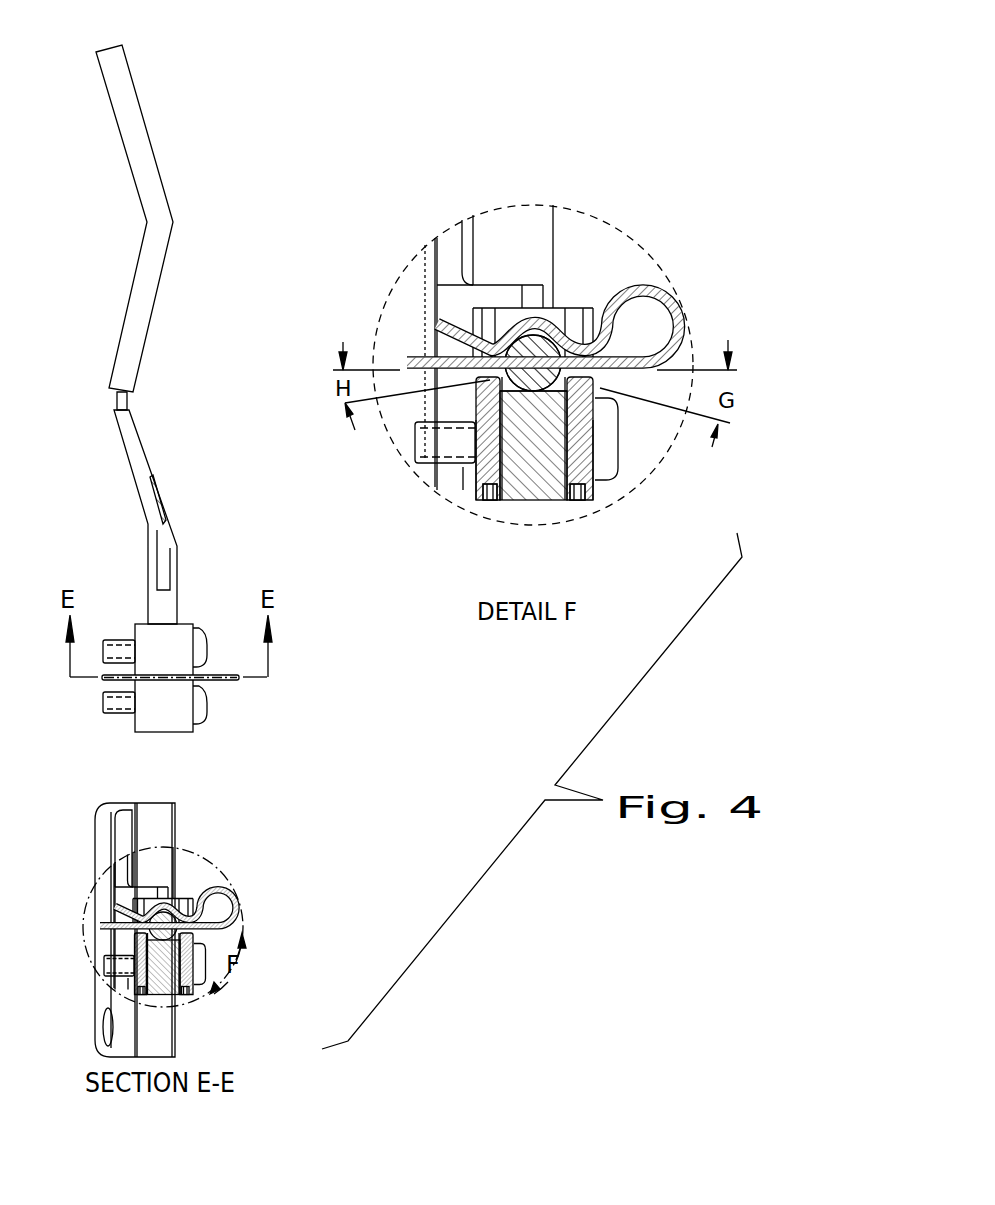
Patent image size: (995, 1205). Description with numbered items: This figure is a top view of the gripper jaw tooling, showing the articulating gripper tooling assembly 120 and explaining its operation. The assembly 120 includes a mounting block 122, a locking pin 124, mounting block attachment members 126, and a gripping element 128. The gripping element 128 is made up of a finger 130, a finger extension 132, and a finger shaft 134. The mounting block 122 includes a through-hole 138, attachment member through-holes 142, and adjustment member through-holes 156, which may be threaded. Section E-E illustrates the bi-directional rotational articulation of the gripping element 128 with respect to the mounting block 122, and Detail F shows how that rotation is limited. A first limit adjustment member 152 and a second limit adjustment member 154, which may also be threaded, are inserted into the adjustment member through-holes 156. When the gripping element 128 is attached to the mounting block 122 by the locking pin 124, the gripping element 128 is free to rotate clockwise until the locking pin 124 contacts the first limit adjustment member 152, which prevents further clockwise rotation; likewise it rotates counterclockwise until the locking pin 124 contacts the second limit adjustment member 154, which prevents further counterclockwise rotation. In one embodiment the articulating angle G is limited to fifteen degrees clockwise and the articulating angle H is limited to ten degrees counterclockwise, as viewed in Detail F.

The articulating gripper tooling assembly 120 is at (174, 84).
The mounting block 122 is at (163, 732).
The locking pin 124 is at (212, 680).
The mounting block attachment members 126 is at (203, 648).
The gripping element 128 is at (160, 167).
The finger 130 is at (102, 45).
The finger extension 132 is at (139, 444).
The finger shaft 134 is at (178, 580).
The through-hole 138 is at (503, 393).
The attachment member through-holes 142 is at (133, 640).
The first limit adjustment member 152 is at (585, 500).
The second limit adjustment member 154 is at (485, 497).
The adjustment member through-holes 156 is at (473, 493).